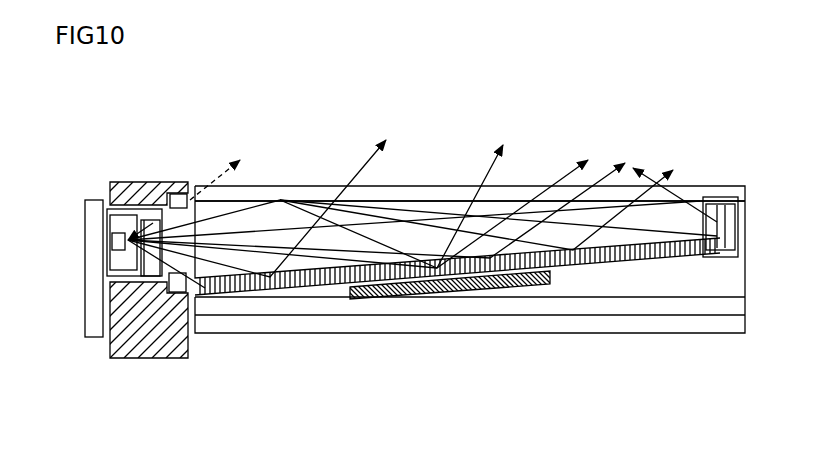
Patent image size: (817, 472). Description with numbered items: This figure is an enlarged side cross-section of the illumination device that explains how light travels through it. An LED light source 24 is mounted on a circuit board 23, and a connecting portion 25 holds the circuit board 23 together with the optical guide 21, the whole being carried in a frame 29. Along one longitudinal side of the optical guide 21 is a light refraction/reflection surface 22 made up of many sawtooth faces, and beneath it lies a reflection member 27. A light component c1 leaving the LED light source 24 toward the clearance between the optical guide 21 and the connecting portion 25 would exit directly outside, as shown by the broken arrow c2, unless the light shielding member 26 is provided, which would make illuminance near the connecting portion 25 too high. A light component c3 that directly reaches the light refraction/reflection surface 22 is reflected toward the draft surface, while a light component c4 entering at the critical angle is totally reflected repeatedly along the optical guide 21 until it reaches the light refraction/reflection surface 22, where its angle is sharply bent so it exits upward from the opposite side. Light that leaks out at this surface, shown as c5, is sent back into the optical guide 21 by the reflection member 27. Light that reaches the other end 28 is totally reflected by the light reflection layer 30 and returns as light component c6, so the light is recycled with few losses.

The optical guide 21 is at (253, 198).
The light refraction/reflection surface 22 is at (560, 270).
The circuit board 23 is at (85, 267).
The LED light source 24 is at (118, 214).
The connecting portion 25 is at (127, 353).
The light shielding member 26 is at (186, 293).
The reflection member 27 is at (455, 285).
The another end 28 is at (727, 236).
The frame 29 is at (503, 187).
The light reflection layer 30 is at (738, 210).
The light component c1 is at (150, 225).
The broken arrow c2 is at (217, 182).
The light component c3 is at (350, 177).
The light component c4 is at (478, 180).
The leaked light c5 is at (607, 167).
The light component c6 is at (637, 170).